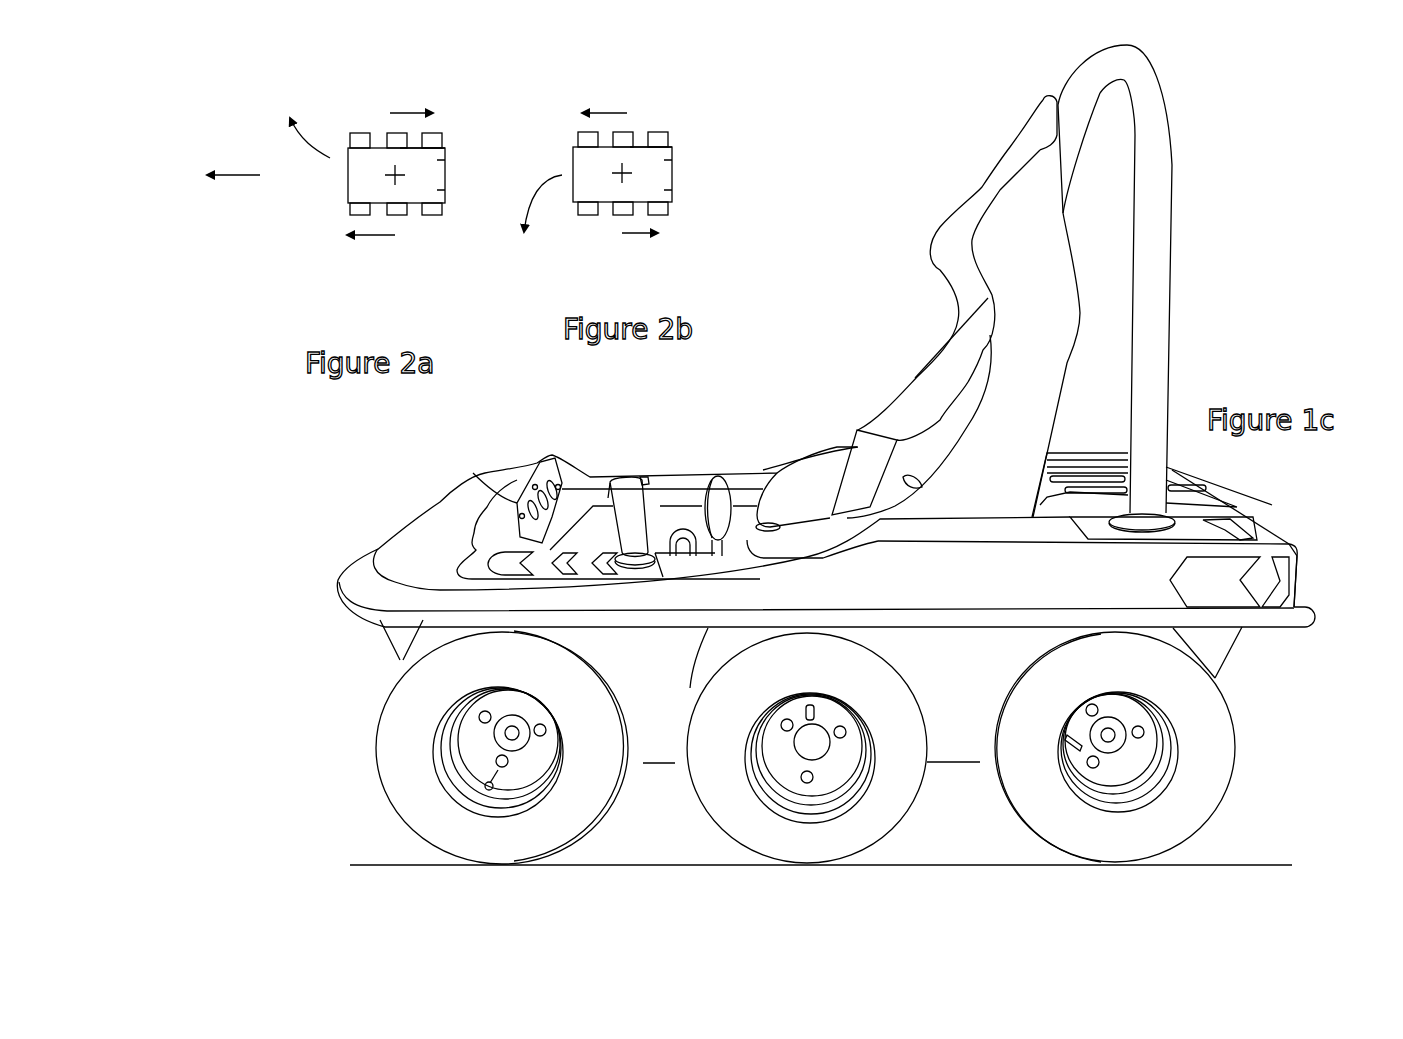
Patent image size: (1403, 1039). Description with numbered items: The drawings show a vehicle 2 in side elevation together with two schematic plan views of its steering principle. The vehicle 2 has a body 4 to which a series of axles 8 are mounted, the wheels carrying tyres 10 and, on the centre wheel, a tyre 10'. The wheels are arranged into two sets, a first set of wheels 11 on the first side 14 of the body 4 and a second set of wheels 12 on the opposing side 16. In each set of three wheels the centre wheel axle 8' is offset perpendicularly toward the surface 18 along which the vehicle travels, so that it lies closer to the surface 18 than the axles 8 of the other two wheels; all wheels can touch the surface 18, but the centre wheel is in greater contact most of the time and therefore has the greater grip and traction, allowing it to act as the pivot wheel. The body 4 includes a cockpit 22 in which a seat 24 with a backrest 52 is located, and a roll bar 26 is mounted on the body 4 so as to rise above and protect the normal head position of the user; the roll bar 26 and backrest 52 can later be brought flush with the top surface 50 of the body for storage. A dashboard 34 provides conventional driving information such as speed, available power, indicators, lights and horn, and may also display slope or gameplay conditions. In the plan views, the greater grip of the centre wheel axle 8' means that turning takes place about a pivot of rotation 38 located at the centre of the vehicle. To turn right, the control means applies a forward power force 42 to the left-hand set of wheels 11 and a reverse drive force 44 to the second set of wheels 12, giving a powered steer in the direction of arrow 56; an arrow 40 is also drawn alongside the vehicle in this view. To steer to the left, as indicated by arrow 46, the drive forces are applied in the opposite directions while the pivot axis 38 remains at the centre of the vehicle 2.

In FIG. 2A, the vehicle 2 is at (432, 188).
In FIG. 2B, the vehicle 2 is at (660, 160).
In FIG. 1C, the vehicle 2 is at (769, 445).
In FIG. 2A, the body 4 is at (434, 172).
In FIG. 2B, the body 4 is at (655, 177).
In FIG. 1C, the body 4 is at (1212, 505).
In FIG. 1C, the axles 8 is at (862, 796).
In FIG. 2A, the centre wheel axle 8' is at (415, 180).
In FIG. 2B, the centre wheel axle 8' is at (616, 176).
In FIG. 1C, the centre wheel axle 8' is at (837, 801).
In FIG. 1C, the tyres 10 is at (770, 769).
In FIG. 2A, the wheel 10' is at (366, 182).
In FIG. 2B, the wheel 10' is at (643, 176).
In FIG. 1C, the wheel 10' is at (746, 771).
In FIG. 2A, the first set of wheels 11 is at (400, 216).
In FIG. 2B, the first set of wheels 11 is at (584, 216).
In FIG. 1C, the first set of wheels 11 is at (807, 863).
In FIG. 2A, the second set of wheels 12 is at (434, 133).
In FIG. 2B, the second set of wheels 12 is at (659, 133).
In FIG. 2A, the first side of the body 14 is at (352, 204).
In FIG. 2B, the first side of the body 14 is at (668, 190).
In FIG. 1C, the first side of the body 14 is at (1240, 610).
In FIG. 2A, the opposing side of the body 16 is at (445, 150).
In FIG. 2B, the opposing side of the body 16 is at (672, 150).
In FIG. 1C, the surface 18 is at (453, 867).
In FIG. 1C, the cockpit 22 is at (680, 512).
In FIG. 1C, the seat 24 is at (970, 378).
In FIG. 1C, the roll bar 26 is at (1147, 327).
In FIG. 1C, the dashboard 34 is at (543, 480).
In FIG. 2A, the pivot of rotation 38 is at (396, 172).
In FIG. 2B, the pivot of rotation 38 is at (618, 172).
In FIG. 2A, the direction of travel 40 is at (233, 191).
In FIG. 2A, the forward power force 42 is at (355, 238).
In FIG. 2B, the forward power force 42 is at (600, 112).
In FIG. 2A, the reverse drive force 44 is at (434, 113).
In FIG. 2B, the reverse drive force 44 is at (662, 237).
In FIG. 2B, the steering direction arrow (left) 46 is at (536, 221).
In FIG. 1C, the top surface of the body 50 is at (598, 480).
In FIG. 1C, the backrest 52 is at (1045, 270).
In FIG. 2A, the powered steer arrow 56 is at (295, 140).